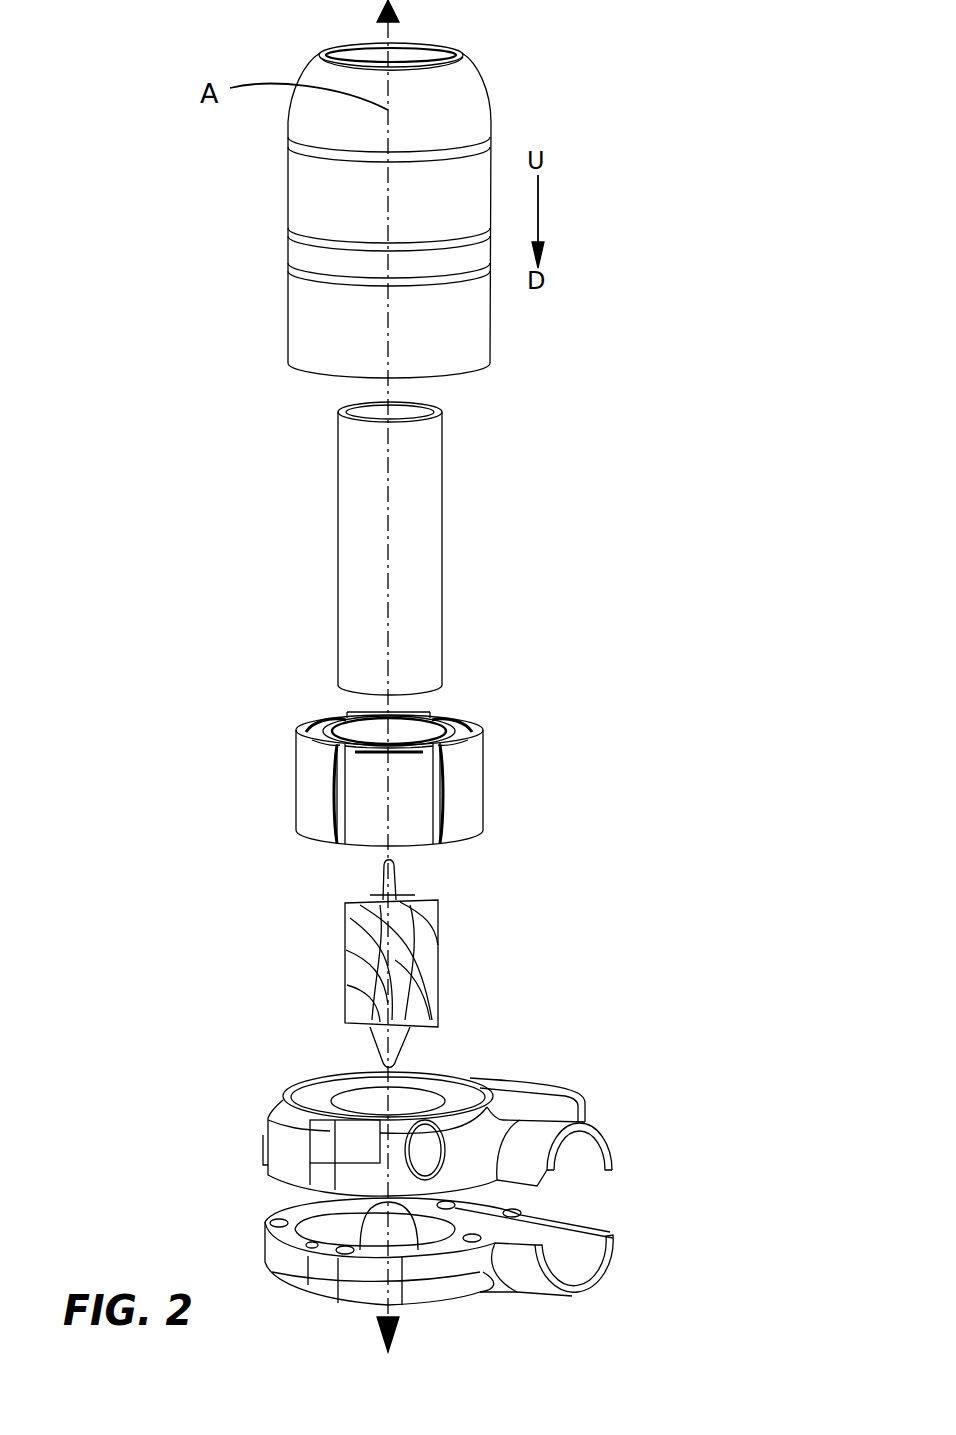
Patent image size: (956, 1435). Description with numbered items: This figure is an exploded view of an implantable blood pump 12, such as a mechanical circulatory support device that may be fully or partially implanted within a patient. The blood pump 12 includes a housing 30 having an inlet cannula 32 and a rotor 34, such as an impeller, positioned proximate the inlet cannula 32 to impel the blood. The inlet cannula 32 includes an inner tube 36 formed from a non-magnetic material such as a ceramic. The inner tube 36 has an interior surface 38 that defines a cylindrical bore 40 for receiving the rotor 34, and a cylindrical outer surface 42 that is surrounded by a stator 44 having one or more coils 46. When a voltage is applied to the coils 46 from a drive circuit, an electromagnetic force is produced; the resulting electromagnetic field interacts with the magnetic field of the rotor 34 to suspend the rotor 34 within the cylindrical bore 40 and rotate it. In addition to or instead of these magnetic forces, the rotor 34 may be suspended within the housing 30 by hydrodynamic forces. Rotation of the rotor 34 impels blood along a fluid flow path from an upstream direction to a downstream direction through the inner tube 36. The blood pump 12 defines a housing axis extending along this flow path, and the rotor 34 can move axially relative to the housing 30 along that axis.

The blood pump 12 is at (175, 350).
The housing 30 is at (588, 258).
The inlet cannula 32 is at (288, 202).
The rotor 34 is at (365, 930).
The inner tube 36 is at (338, 653).
The interior surface 38 is at (428, 405).
The cylindrical bore 40 is at (357, 405).
The cylindrical outer surface 42 is at (338, 475).
The stator 44 is at (483, 805).
The coils 46 is at (470, 722).